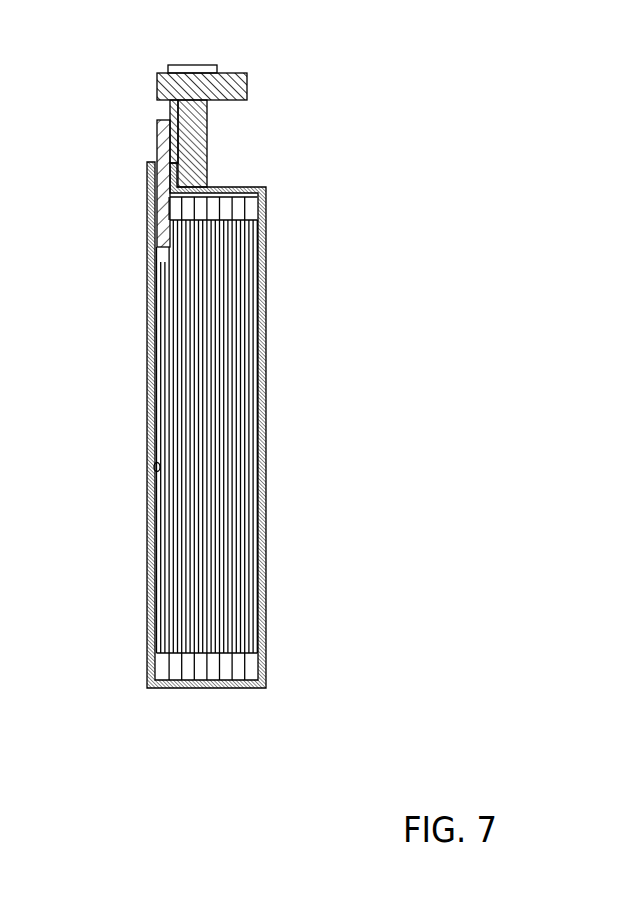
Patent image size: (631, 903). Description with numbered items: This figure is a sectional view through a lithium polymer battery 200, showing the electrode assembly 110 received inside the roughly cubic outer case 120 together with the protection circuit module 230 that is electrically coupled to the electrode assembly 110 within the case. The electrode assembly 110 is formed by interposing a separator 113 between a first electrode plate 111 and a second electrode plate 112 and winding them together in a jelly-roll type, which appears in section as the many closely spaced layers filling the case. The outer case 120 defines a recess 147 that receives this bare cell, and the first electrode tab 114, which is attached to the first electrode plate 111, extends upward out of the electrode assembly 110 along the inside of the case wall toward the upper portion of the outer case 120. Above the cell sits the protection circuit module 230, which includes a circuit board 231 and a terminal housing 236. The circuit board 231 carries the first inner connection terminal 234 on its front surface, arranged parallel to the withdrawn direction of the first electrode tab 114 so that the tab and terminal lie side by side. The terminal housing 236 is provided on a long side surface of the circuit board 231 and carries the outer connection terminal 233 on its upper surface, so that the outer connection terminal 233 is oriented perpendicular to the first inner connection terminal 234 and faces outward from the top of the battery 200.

The lithium polymer battery 200 is at (107, 31).
The electrode assembly 110 is at (275, 438).
The first electrode plate 111 is at (248, 435).
The second electrode plate 112 is at (236, 498).
The separator 113 is at (241, 468).
The first electrode tab 114 is at (160, 143).
The outer case 120 is at (268, 357).
The recess 147 is at (154, 466).
The protection circuit module 230 is at (211, 100).
The circuit board 231 is at (202, 150).
The outer connection terminal 233 is at (193, 67).
The first inner connection terminal 234 is at (170, 108).
The terminal housing 236 is at (233, 82).